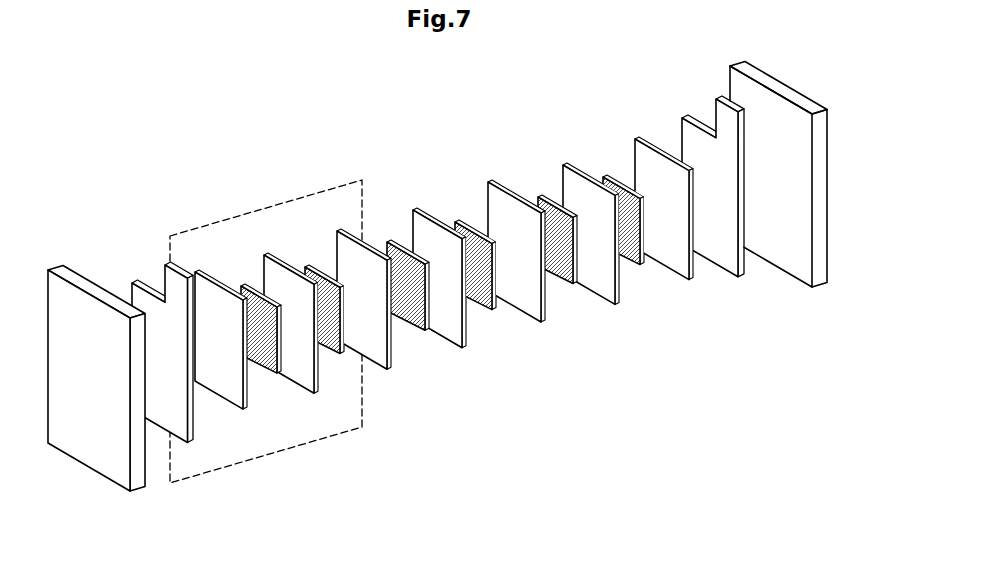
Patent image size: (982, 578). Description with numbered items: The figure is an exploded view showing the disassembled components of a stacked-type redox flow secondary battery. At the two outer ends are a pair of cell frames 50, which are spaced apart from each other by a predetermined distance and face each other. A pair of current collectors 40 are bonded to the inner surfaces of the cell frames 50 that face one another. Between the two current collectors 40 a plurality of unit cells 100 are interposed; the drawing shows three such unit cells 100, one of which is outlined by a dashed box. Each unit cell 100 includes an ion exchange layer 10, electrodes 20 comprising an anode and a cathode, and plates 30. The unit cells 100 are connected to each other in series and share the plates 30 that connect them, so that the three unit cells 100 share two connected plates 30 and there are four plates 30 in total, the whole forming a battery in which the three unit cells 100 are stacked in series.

The ion exchange layer 10 is at (582, 177).
The electrodes 20 is at (425, 330).
The plates 30 is at (246, 409).
The current collectors 40 is at (191, 441).
The cell frames 50 is at (131, 491).
The unit cells 100 is at (226, 220).